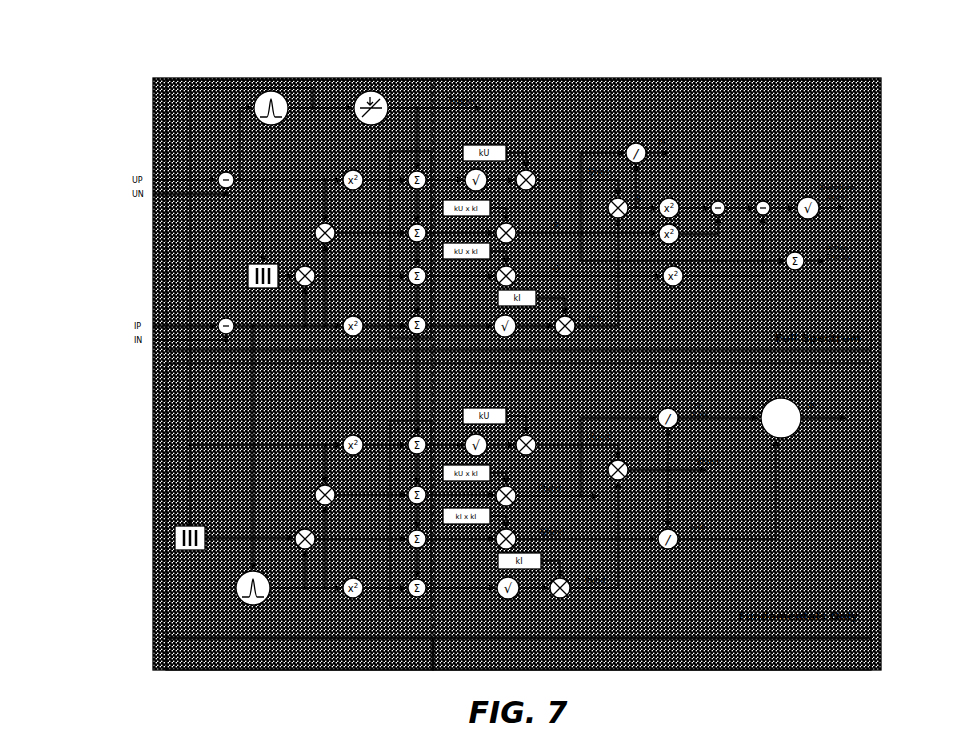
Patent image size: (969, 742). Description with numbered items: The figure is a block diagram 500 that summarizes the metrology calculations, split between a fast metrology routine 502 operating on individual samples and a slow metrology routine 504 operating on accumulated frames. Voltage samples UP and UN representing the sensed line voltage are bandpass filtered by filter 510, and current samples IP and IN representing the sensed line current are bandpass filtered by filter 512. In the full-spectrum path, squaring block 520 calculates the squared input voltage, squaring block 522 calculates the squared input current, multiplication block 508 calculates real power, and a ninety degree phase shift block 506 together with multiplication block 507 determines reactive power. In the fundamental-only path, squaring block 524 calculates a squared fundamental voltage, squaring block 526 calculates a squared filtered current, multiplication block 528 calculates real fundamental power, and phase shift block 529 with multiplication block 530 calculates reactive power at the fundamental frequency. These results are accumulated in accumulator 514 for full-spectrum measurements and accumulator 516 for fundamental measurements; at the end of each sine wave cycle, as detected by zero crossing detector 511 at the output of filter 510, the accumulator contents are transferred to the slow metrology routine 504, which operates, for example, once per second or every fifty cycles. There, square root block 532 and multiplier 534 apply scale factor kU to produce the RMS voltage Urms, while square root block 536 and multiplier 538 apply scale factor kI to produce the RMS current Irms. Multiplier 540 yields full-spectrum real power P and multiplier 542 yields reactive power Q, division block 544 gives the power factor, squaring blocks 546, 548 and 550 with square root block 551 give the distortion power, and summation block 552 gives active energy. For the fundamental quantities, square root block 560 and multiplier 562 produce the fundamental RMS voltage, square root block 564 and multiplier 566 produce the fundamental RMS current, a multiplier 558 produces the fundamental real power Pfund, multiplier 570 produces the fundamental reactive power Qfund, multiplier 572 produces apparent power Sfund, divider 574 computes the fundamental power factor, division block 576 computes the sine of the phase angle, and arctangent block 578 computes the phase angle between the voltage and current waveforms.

The block diagram 500 is at (100, 92).
The fast metrology routine 502 is at (314, 662).
The slow metrology routine 504 is at (788, 662).
The 90° phase shift block 506 is at (241, 258).
The multiplication block 507 is at (290, 262).
The multiplication block 508 is at (311, 219).
The filter 510 is at (278, 110).
The zero crossing detector 511 is at (377, 92).
The filter 512 is at (240, 564).
The accumulator 514 is at (382, 165).
The accumulator 516 is at (396, 414).
The squaring block 520 is at (339, 165).
The squaring block 522 is at (337, 323).
The squaring block 524 is at (342, 428).
The squaring block 526 is at (348, 571).
The multiplication block 528 is at (312, 480).
The phase shift block 529 is at (187, 518).
The multiplication block 530 is at (290, 524).
The square root block 532 is at (477, 179).
The multiplier 534 is at (526, 168).
The square root block 536 is at (503, 326).
The multiplier 538 is at (564, 325).
The multiplier 540 is at (506, 220).
The multiplier 542 is at (505, 261).
The division block 544 is at (619, 141).
The squaring block 546 is at (672, 188).
The squaring block 548 is at (670, 232).
The squaring block 550 is at (672, 276).
The square root block 551 is at (812, 204).
The summation block 552 is at (795, 257).
The multiplier 558 is at (505, 481).
The square root block 560 is at (477, 443).
The multiplier 562 is at (526, 433).
The square root block 564 is at (492, 588).
The multiplier 566 is at (548, 588).
The multiplier 570 is at (506, 524).
The multiplier 572 is at (618, 456).
The divider 574 is at (651, 404).
The division block 576 is at (669, 539).
The arctangent block 578 is at (785, 423).